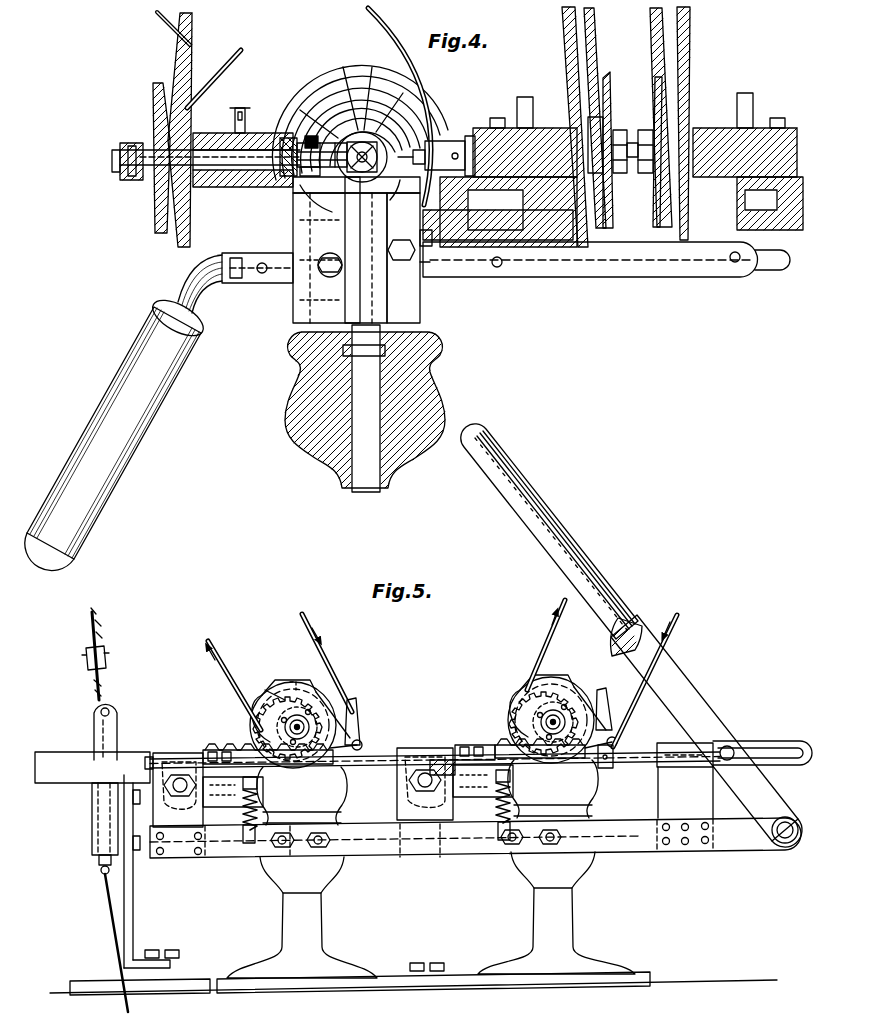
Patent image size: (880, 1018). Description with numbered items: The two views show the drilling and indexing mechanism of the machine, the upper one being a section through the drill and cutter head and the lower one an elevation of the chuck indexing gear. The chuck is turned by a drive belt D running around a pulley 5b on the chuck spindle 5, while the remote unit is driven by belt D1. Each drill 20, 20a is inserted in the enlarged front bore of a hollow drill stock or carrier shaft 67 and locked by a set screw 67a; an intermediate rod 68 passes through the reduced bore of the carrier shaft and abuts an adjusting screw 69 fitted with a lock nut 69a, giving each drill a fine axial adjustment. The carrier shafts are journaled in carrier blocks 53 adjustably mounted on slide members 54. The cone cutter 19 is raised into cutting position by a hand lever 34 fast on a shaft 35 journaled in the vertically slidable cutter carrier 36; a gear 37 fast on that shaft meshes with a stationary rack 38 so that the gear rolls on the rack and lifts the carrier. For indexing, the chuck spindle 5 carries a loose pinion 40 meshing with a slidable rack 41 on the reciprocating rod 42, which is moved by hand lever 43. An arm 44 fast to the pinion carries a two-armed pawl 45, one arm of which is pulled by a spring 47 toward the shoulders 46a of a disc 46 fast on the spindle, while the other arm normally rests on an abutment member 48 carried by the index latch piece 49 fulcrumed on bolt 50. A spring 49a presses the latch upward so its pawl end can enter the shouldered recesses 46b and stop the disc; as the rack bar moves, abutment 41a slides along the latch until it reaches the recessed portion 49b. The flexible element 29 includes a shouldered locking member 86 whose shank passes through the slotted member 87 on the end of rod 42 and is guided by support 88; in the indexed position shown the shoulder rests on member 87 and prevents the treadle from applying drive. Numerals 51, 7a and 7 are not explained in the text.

In FIG. 4, the pulley 51 is at (178, 48).
In FIG. 4, the drive belt D is at (215, 75).
In FIG. 5, the drive belt D is at (642, 681).
In FIG. 4, the adjusting screw 69 is at (126, 158).
In FIG. 4, the lock nut 69a is at (134, 148).
In FIG. 4, the intermediate rod 68 is at (221, 160).
In FIG. 4, the drill stock or carrier shaft 67 is at (300, 148).
In FIG. 4, the set screw 67a is at (313, 143).
In FIG. 4, the pulley 5b is at (310, 140).
In FIG. 4, the drill 20 is at (348, 138).
In FIG. 4, the chuck spindle 5 is at (358, 133).
In FIG. 5, the chuck spindle 5 is at (291, 720).
In FIG. 4, the hub 7a is at (370, 133).
In FIG. 4, the drill 20a is at (432, 150).
In FIG. 4, the carrier block 53 is at (538, 145).
In FIG. 4, the shaft 35 is at (470, 268).
In FIG. 4, the slide member 54 is at (540, 228).
In FIG. 4, the cone cutter 19 is at (335, 192).
In FIG. 4, the gear 37 is at (293, 246).
In FIG. 4, the cutter carrier 36 is at (293, 290).
In FIG. 4, the stationary rack 38 is at (293, 330).
In FIG. 4, the hand lever 34 is at (123, 418).
In FIG. 5, the flexible element 29 is at (100, 628).
In FIG. 5, the shouldered locking member 86 is at (109, 744).
In FIG. 5, the slotted bar or member 87 is at (77, 770).
In FIG. 5, the support 88 is at (96, 834).
In FIG. 5, the belt D1 is at (234, 683).
In FIG. 5, the abutments or shoulders 46a is at (262, 708).
In FIG. 5, the slidable rack 41 is at (224, 748).
In FIG. 5, the hub 7 is at (285, 727).
In FIG. 5, the disc 46 is at (277, 690).
In FIG. 5, the loose gear or pinion 40 is at (289, 700).
In FIG. 5, the shouldered recesses 46b is at (300, 690).
In FIG. 5, the arm 44 is at (340, 712).
In FIG. 5, the two-armed pawl 45 is at (360, 745).
In FIG. 5, the reciprocating bar or rod 42 is at (374, 760).
In FIG. 5, the index latch piece 49 is at (240, 793).
In FIG. 5, the spring 49a is at (240, 828).
In FIG. 5, the pin or bolt 50 is at (400, 793).
In FIG. 5, the low or recessed portion 49b is at (440, 778).
In FIG. 5, the abutment 41a is at (460, 748).
In FIG. 5, the abutment member 48 is at (508, 722).
In FIG. 5, the spring 47 is at (603, 760).
In FIG. 5, the hand lever 43 is at (597, 593).